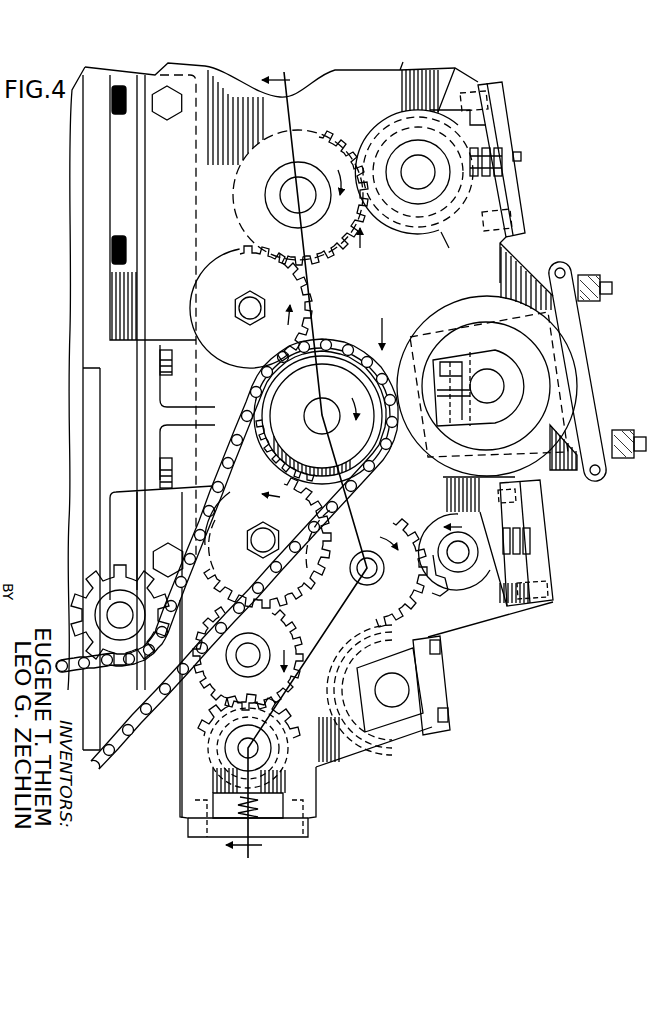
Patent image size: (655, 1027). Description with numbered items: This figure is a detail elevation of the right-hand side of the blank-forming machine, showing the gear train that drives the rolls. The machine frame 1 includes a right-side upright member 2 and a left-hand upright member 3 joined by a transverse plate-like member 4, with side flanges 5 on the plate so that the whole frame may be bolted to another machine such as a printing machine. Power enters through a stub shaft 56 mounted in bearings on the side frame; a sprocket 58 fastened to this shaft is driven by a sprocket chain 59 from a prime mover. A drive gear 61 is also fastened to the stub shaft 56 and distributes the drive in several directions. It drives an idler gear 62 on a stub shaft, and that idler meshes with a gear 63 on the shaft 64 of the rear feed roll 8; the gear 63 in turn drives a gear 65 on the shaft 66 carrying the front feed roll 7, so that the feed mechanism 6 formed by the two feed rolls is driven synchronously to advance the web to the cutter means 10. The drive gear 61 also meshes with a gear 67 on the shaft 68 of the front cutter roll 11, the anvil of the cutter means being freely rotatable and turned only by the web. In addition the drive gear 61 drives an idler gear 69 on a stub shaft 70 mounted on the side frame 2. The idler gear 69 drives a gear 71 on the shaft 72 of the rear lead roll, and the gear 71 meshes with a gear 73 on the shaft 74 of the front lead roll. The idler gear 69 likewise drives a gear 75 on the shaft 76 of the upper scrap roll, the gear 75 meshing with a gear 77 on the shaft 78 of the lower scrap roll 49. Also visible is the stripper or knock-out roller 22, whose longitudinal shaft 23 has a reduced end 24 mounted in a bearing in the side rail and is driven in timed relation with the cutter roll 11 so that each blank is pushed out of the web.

The machine frame 1 is at (524, 188).
The right-side upright member 2 is at (500, 256).
The left-hand upright member 3 is at (296, 467).
The transverse plate-like member 4 is at (155, 195).
The side flanges 5 is at (122, 162).
The feed mechanism 6 is at (363, 250).
The front feed roll 7 is at (448, 249).
The rear feed roll 8 is at (273, 134).
The cutter means 10 is at (382, 325).
The front cutter roll 11 is at (575, 366).
The stripper or knock-out roller 22 is at (370, 747).
The longitudinal shaft 23 is at (422, 688).
The reduced end 24 is at (396, 694).
The lower scrap roll 49 is at (282, 758).
The stub shaft 56 is at (312, 404).
The sprocket 58 is at (334, 348).
The sprocket chain 59 is at (222, 466).
The drive gear 61 is at (244, 498).
The idler gear 62 is at (200, 280).
The gear 63 is at (312, 134).
The shaft 64 is at (280, 195).
The gear 65 is at (444, 90).
The shaft 66 is at (432, 168).
The gear 67 is at (427, 312).
The shaft 68 is at (490, 393).
The idler gear 69 is at (213, 560).
The stub shaft 70 is at (270, 530).
The gear 71 is at (437, 594).
The gear shaft 72 is at (373, 578).
The gear 73 is at (420, 516).
The shaft 74 is at (470, 546).
The gear 75 is at (300, 636).
The shaft 76 is at (212, 706).
The gear 77 is at (286, 736).
The shaft 78 is at (236, 751).